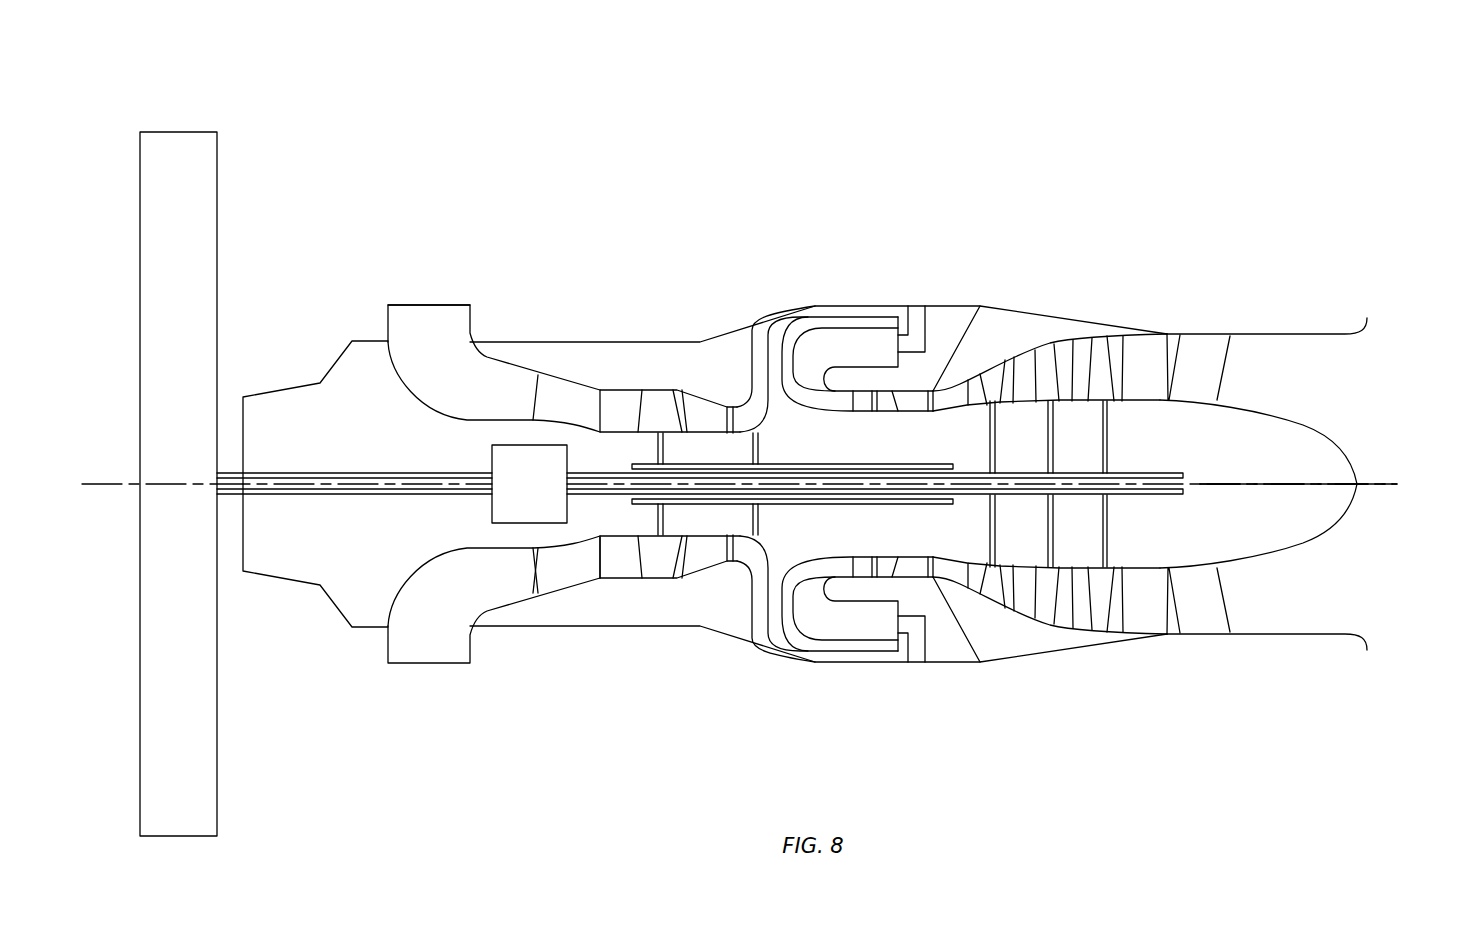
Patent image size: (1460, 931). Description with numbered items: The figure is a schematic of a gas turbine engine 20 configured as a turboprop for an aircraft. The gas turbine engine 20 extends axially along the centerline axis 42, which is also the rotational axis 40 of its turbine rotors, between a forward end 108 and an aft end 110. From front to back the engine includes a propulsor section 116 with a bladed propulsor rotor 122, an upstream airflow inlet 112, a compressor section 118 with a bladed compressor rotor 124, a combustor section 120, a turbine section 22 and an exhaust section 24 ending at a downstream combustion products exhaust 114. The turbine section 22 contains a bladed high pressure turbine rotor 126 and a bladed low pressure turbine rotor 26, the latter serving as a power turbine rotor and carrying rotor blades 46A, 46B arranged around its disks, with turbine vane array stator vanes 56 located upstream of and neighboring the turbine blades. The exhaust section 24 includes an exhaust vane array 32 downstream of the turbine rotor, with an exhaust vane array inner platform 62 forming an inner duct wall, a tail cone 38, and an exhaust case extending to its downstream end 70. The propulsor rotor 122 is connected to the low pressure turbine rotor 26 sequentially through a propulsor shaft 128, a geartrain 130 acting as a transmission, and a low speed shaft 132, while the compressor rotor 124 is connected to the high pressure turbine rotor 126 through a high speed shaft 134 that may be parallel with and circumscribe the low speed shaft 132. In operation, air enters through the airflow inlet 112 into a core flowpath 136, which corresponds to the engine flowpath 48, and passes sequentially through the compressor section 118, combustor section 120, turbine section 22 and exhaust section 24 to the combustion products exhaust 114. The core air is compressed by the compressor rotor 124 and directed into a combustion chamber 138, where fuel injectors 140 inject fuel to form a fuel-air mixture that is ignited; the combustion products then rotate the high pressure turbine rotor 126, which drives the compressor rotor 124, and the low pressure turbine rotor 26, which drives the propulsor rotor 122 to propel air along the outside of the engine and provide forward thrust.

The gas turbine engine 20 is at (220, 80).
The turbine section 22 is at (1020, 333).
The exhaust section 24 is at (1233, 327).
The low pressure turbine rotor 26 is at (1115, 450).
The exhaust vane array 32 is at (1233, 372).
The tail cone 38 is at (1333, 435).
The rotational axis 40 is at (1383, 488).
The centerline axis 42 is at (1300, 529).
The rotor blade 46A is at (1057, 405).
The rotor blade 46B is at (1120, 373).
The flowpath 48 is at (513, 398).
The turbine vane array stator vanes 56 is at (1100, 360).
The exhaust vane array inner platform 62 is at (1140, 512).
The downstream end of the exhaust case 70 is at (1367, 318).
The forward end 108 is at (140, 500).
The aft end 110 is at (1357, 482).
The airflow inlet 112 is at (432, 303).
The combustion products exhaust 114 is at (1345, 370).
The propulsor section 116 is at (248, 142).
The compressor section 118 is at (708, 365).
The combustor section 120 is at (890, 298).
The propulsor rotor 122 is at (140, 245).
The compressor rotor 124 is at (768, 450).
The high pressure turbine rotor 126 is at (897, 445).
The propulsor shaft 128 is at (325, 474).
The geartrain 130 is at (512, 499).
The low speed shaft 132 is at (583, 497).
The high speed shaft 134 is at (787, 505).
The core flowpath 136 is at (587, 482).
The combustion chamber 138 is at (886, 357).
The fuel injectors 140 is at (927, 325).